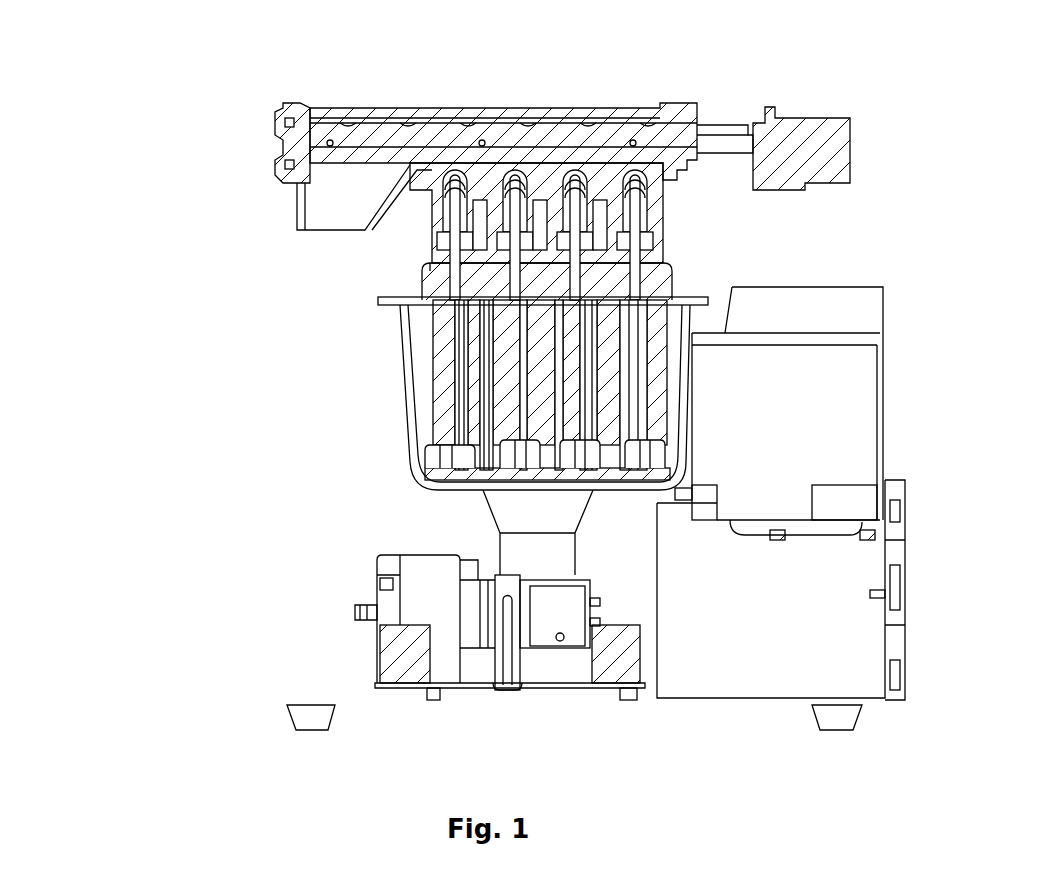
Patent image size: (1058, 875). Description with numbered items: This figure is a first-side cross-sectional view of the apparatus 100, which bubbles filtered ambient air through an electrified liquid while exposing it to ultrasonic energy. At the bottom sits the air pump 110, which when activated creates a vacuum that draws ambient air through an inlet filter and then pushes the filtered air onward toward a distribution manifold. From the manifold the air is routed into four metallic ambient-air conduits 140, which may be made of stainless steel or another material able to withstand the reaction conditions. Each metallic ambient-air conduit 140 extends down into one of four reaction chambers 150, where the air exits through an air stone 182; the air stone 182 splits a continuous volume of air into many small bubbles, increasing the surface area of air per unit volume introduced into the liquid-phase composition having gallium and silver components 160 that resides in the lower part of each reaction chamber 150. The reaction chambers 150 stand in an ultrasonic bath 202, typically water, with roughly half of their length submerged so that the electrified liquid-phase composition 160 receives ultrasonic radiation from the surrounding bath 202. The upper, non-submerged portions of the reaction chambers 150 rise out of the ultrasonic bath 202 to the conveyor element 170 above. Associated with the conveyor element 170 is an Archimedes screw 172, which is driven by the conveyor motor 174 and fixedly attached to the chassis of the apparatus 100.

The apparatus 100 is at (150, 104).
The air pump 110 is at (415, 605).
The metallic ambient-air conduit 140 is at (450, 409).
The reaction chamber 150 is at (430, 360).
The liquid-phase composition having gallium and silver components 160 is at (440, 421).
The conveyor element 170 is at (358, 133).
The Archimedes screw 172 is at (503, 132).
The conveyor motor 174 is at (847, 137).
The air stone 182 is at (430, 470).
The ultrasonic bath 202 is at (405, 331).